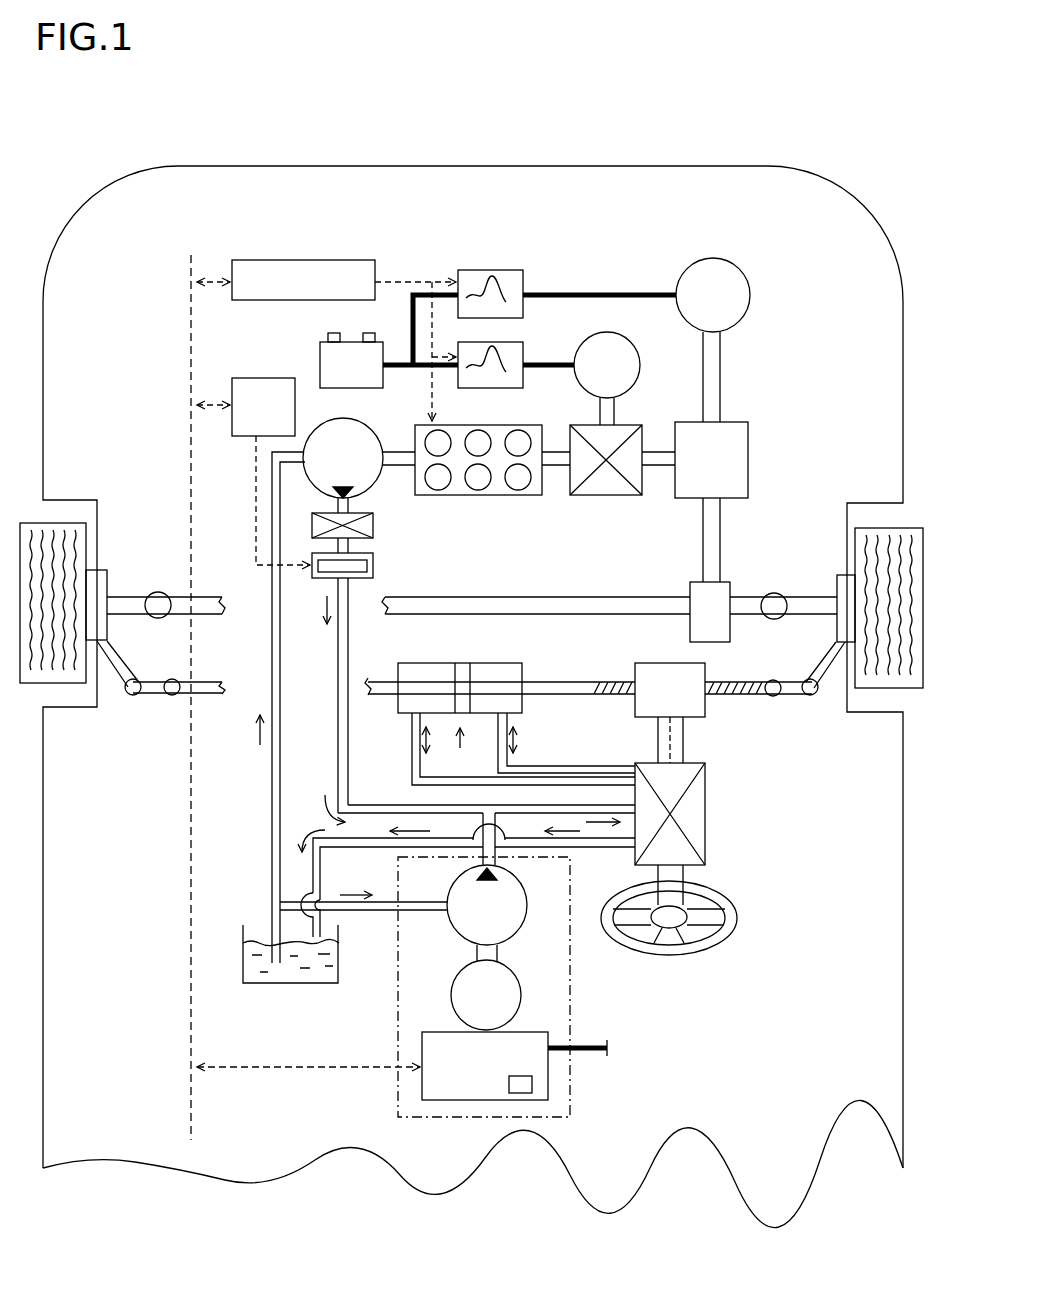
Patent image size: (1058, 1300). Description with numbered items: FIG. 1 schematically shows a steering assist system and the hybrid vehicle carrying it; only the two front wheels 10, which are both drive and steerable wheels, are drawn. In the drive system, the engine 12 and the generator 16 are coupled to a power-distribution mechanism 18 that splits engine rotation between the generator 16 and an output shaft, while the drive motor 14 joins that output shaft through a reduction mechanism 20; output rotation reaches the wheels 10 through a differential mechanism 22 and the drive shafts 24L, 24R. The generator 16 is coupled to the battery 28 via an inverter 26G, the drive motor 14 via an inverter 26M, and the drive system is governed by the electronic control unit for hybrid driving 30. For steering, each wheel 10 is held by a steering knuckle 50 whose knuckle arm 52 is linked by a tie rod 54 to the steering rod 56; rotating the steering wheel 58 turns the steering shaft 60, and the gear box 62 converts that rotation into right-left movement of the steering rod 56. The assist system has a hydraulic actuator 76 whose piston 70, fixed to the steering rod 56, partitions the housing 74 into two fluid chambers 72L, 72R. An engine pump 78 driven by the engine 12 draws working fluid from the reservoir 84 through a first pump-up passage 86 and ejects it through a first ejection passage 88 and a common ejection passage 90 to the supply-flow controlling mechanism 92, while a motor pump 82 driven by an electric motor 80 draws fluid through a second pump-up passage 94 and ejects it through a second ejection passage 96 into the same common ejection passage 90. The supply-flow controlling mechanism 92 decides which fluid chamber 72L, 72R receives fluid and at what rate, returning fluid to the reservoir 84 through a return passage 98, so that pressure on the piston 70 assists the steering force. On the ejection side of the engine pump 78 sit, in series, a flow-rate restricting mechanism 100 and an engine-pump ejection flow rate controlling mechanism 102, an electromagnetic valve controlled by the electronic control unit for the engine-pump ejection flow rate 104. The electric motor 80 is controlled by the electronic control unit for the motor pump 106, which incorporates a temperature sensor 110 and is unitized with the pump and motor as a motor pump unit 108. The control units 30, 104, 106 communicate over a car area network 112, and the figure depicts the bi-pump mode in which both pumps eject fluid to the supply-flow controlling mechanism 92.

The wheel 10 is at (37, 522).
The engine 12 is at (497, 426).
The drive motor 14 is at (745, 277).
The generator 16 is at (630, 343).
The power-distribution mechanism 18 is at (626, 427).
The reduction mechanism 20 is at (738, 428).
The differential mechanism 22 is at (688, 584).
The drive shaft 24L is at (437, 600).
The drive shaft 24R is at (748, 598).
The inverter 26M is at (515, 270).
The inverter 26G is at (515, 342).
The battery 28 is at (319, 350).
The electronic control unit for hybrid driving 30 is at (360, 261).
The steering knuckle 50 is at (106, 572).
The knuckle arm 52 is at (116, 668).
The tie rod 54 is at (170, 696).
The steering rod 56 is at (562, 682).
The steering wheel 58 is at (722, 900).
The steering shaft 60 is at (685, 740).
The gear box 62 is at (705, 670).
The piston 70 is at (462, 666).
The fluid chamber 72L is at (409, 666).
The fluid chamber 72R is at (506, 668).
The housing 74 is at (488, 666).
The hydraulic actuator 76 is at (462, 752).
The engine pump 78 is at (366, 428).
The electric motor 80 is at (512, 980).
The motor pump 82 is at (518, 924).
The reservoir 84 is at (242, 978).
The first pump-up passage 86 is at (270, 792).
The first ejection passage 88 is at (349, 746).
The common ejection passage 90 is at (521, 808).
The supply-flow controlling mechanism 92 is at (706, 812).
The second pump-up passage 94 is at (386, 912).
The second ejection passage 96 is at (481, 826).
The return passage 98 is at (372, 850).
The flow-rate restricting mechanism 100 is at (374, 526).
The engine-pump ejection flow rate controlling mechanism 102 is at (374, 563).
The electronic control unit for the engine-pump ejection flow rate 104 is at (238, 379).
The electronic control unit for the motor pump 106 is at (432, 1034).
The motor pump unit 108 is at (572, 990).
The temperature sensor 110 is at (520, 1094).
The car area network 112 is at (188, 872).